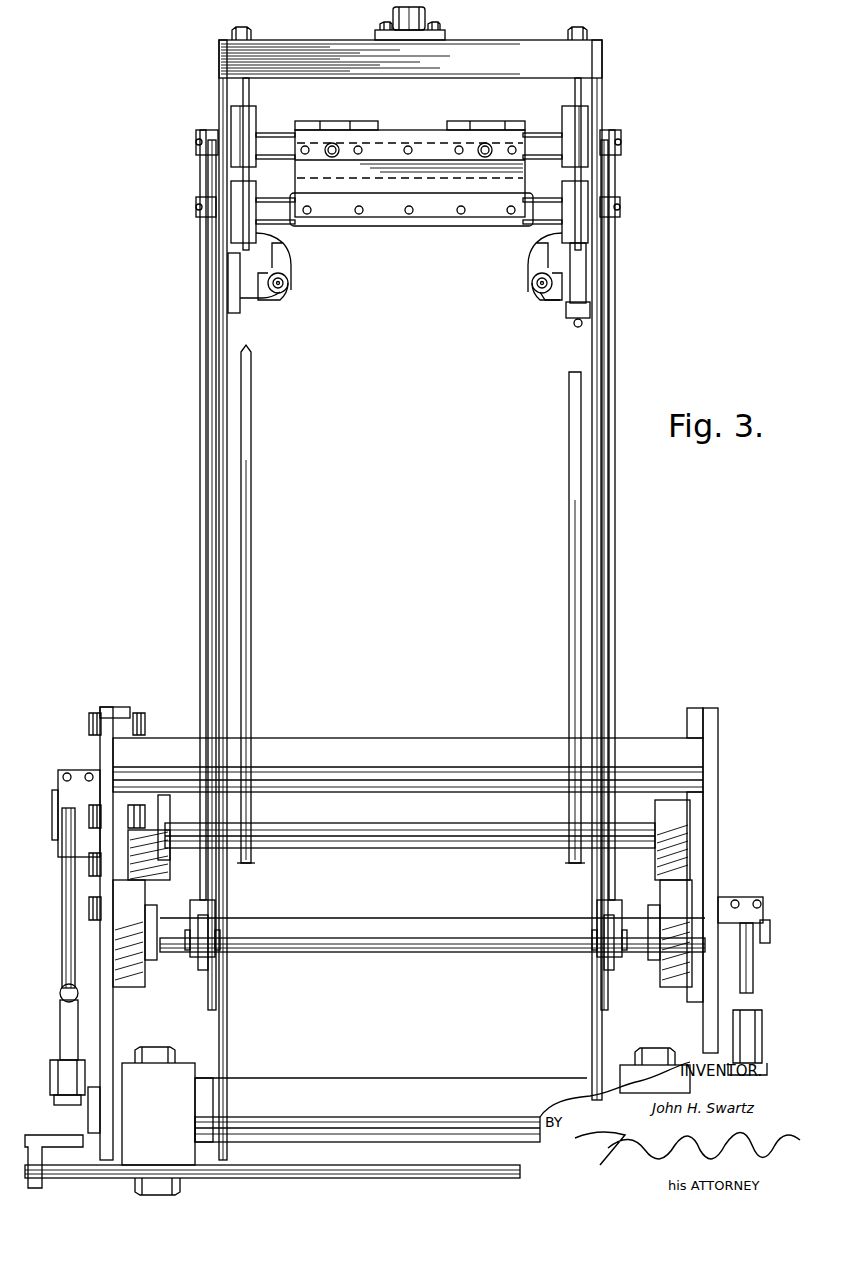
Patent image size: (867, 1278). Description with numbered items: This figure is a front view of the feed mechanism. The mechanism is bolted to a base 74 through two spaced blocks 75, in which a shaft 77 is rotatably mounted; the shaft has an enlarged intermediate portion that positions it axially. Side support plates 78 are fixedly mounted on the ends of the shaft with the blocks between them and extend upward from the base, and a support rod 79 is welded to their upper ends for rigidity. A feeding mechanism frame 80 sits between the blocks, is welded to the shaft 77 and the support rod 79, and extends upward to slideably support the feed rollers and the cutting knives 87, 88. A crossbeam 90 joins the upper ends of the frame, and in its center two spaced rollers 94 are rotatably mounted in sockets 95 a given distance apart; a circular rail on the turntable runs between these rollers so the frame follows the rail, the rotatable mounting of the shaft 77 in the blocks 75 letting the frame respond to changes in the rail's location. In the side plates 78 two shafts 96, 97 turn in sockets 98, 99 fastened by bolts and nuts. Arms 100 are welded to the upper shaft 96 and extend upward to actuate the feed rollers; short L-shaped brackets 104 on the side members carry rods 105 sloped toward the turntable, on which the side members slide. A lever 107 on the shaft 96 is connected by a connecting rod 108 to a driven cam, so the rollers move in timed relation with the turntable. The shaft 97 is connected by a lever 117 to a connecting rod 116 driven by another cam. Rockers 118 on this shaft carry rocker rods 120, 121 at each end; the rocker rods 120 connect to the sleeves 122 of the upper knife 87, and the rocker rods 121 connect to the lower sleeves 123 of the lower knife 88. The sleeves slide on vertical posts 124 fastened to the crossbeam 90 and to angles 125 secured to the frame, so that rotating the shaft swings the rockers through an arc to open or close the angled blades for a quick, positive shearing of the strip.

The base 74 is at (405, 1167).
The blocks 75 is at (178, 1075).
The shaft 77 is at (428, 1093).
The side support plates 78 is at (712, 832).
The support rod 79 is at (334, 748).
The feeding mechanism frame 80 is at (221, 541).
The upper cutting knife 87 is at (403, 135).
The lower cutting knife 88 is at (416, 200).
The crossbeam 90 is at (525, 62).
The rollers 94 is at (393, 15).
The sockets 95 is at (445, 34).
The upper shaft 96 is at (347, 826).
The shaft 97 is at (370, 926).
The sockets 98 is at (668, 879).
The sockets 99 is at (142, 982).
The arms 100 is at (250, 626).
The L-shaped brackets 104 is at (262, 236).
The rods 105 is at (268, 272).
The lever 107 is at (65, 941).
The connecting rod 108 is at (62, 1010).
The connecting rod 116 is at (760, 1020).
The lever 117 is at (754, 975).
The rockers 118 is at (206, 963).
The rocker rods 120 is at (208, 373).
The rocker rods 121 is at (204, 328).
The sleeves 122 is at (312, 110).
The lower sleeves 123 is at (238, 235).
The posts 124 is at (312, 91).
The angles 125 is at (568, 310).